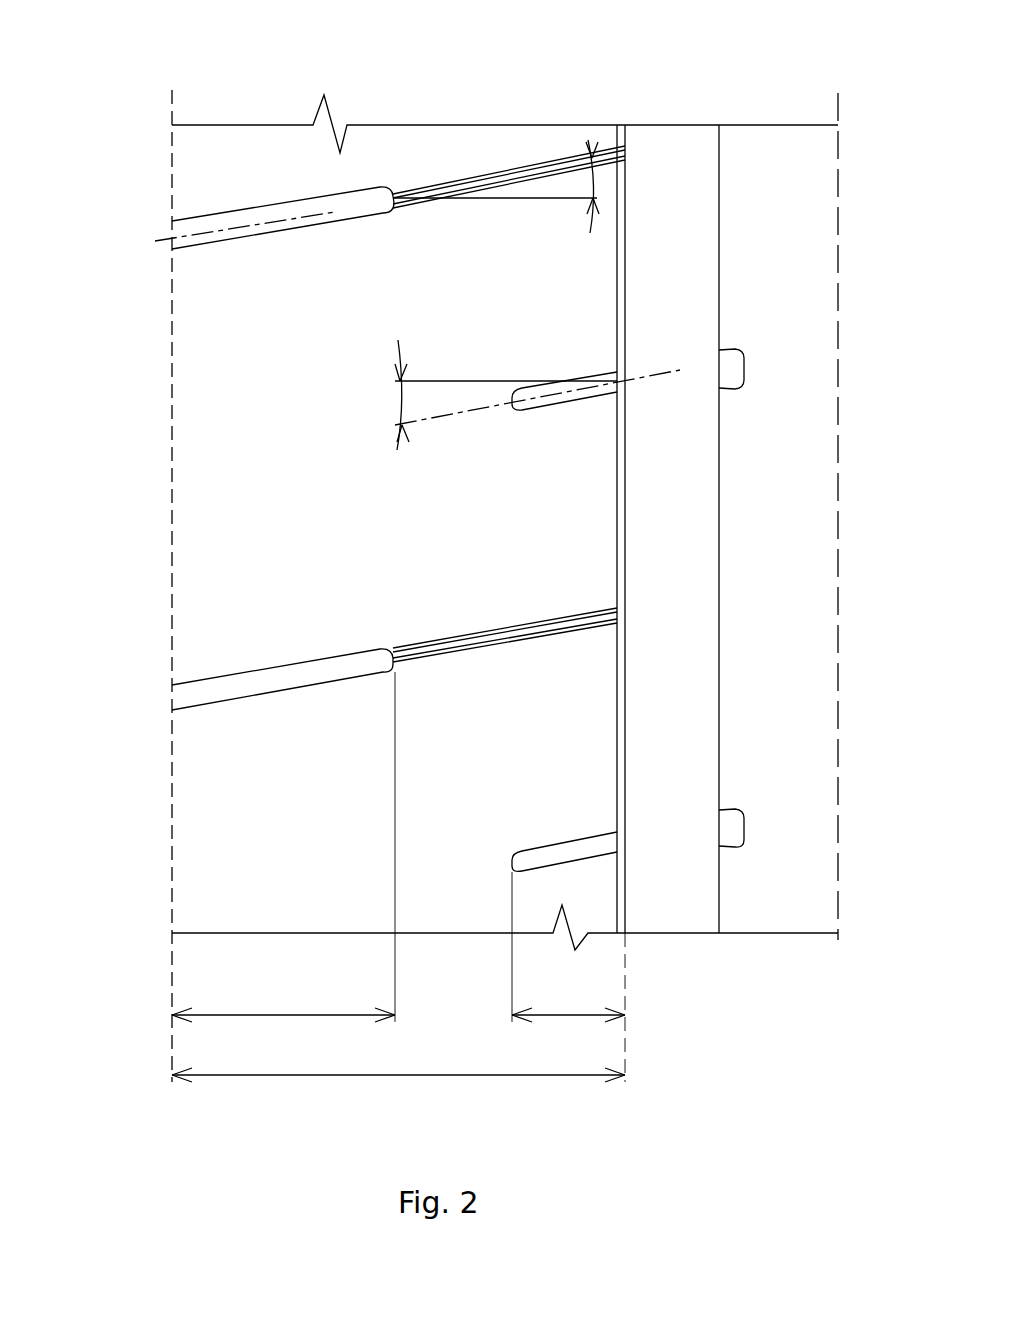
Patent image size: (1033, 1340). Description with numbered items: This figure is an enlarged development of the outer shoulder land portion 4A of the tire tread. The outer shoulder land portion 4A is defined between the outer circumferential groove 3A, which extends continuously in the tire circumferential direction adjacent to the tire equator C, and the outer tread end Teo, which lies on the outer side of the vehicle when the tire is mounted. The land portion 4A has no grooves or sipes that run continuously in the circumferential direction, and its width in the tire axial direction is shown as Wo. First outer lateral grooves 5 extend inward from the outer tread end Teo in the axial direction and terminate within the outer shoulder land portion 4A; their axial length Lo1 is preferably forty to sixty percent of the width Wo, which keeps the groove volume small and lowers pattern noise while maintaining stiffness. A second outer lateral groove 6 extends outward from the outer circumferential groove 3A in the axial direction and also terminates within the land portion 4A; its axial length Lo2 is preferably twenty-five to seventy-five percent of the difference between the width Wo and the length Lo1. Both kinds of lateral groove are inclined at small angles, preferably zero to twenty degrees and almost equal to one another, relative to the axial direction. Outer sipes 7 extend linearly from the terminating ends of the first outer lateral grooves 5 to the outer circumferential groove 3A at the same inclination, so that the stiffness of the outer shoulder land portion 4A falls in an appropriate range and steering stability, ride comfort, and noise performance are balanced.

The outer circumferential groove 3A is at (655, 140).
The outer shoulder land portion 4A is at (400, 150).
The first outer lateral groove 5 is at (283, 218).
The second outer lateral groove 6 is at (583, 395).
The outer sipe 7 is at (500, 170).
The tire equator C is at (836, 500).
The outer tread end Teo is at (170, 183).
The length of the first outer lateral groove Lo1 is at (283, 847).
The length of the second outer lateral groove Lo2 is at (568, 977).
The width of the outer shoulder land portion Wo is at (398, 1061).